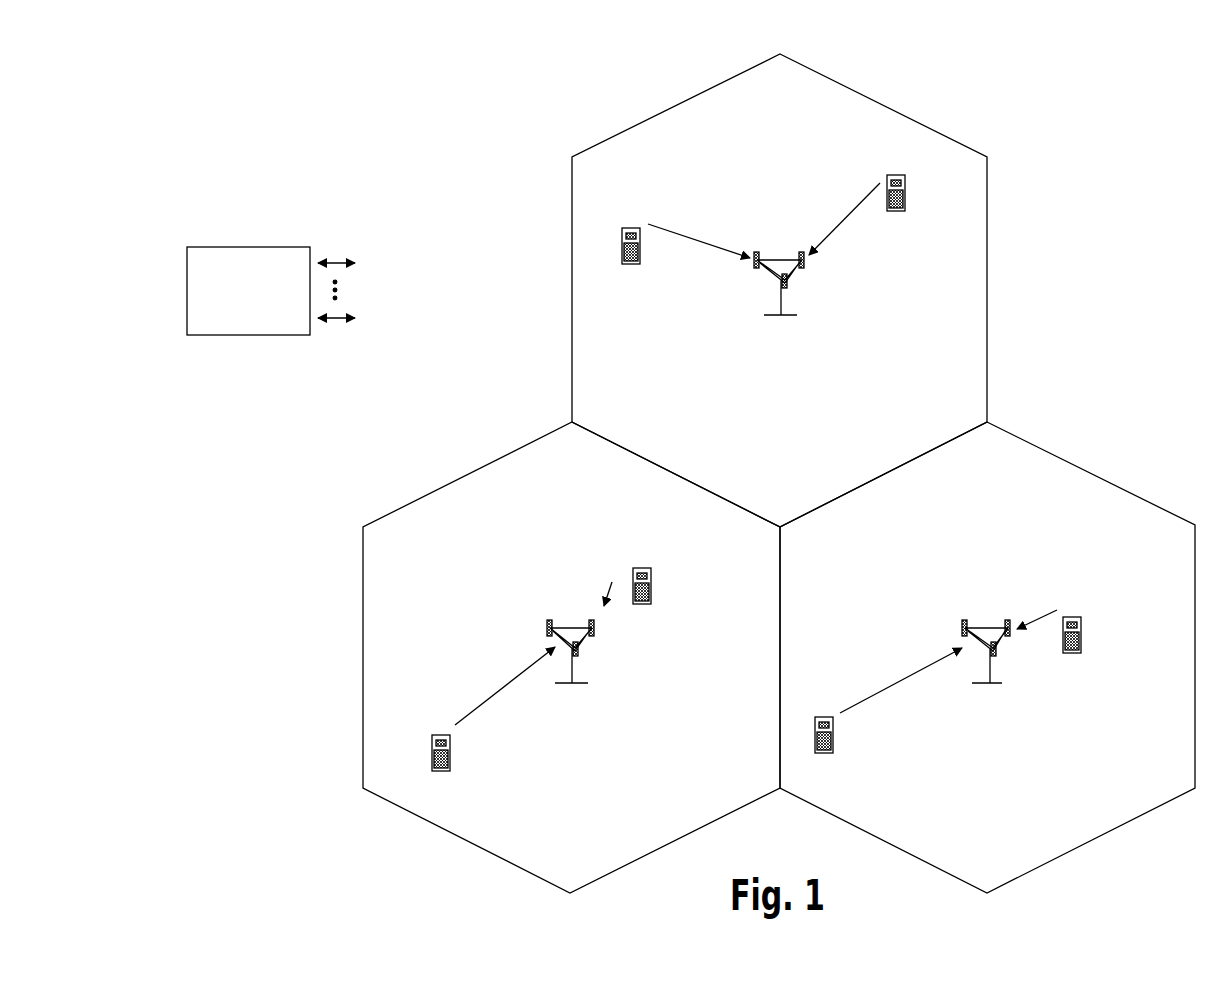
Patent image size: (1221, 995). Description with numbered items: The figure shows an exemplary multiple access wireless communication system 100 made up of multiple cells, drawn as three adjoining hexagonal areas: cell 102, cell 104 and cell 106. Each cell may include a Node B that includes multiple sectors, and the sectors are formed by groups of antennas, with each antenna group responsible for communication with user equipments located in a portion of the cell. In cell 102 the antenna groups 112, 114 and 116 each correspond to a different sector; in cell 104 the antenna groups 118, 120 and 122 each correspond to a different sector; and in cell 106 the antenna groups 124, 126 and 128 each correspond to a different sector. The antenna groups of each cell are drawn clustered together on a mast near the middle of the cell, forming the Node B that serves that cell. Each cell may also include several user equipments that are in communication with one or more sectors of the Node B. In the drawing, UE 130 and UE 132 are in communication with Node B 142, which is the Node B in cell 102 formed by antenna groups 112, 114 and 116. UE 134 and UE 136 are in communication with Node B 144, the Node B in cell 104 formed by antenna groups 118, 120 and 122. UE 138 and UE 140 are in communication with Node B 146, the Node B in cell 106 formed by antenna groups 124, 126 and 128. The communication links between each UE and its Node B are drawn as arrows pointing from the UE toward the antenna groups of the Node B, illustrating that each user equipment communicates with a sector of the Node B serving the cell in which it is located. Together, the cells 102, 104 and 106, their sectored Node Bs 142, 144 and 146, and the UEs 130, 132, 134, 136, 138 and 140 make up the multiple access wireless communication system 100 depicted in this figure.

The multiple access wireless communication system 100 is at (1133, 95).
The cell 102 is at (1012, 465).
The cell 104 is at (763, 561).
The cell 106 is at (618, 418).
The antenna group 112 is at (963, 626).
The antenna group 114 is at (996, 655).
The antenna group 116 is at (1012, 636).
The antenna group 118 is at (580, 652).
The antenna group 120 is at (596, 635).
The antenna group 122 is at (549, 622).
The antenna group 124 is at (759, 270).
The antenna group 126 is at (790, 285).
The antenna group 128 is at (804, 268).
The UE 130 is at (242, 246).
The UE 132 is at (819, 715).
The UE 134 is at (644, 567).
The UE 136 is at (442, 732).
The UE 138 is at (632, 227).
The UE 140 is at (895, 174).
The Node B 142 is at (992, 622).
The Node B 144 is at (570, 622).
The Node B 146 is at (774, 257).